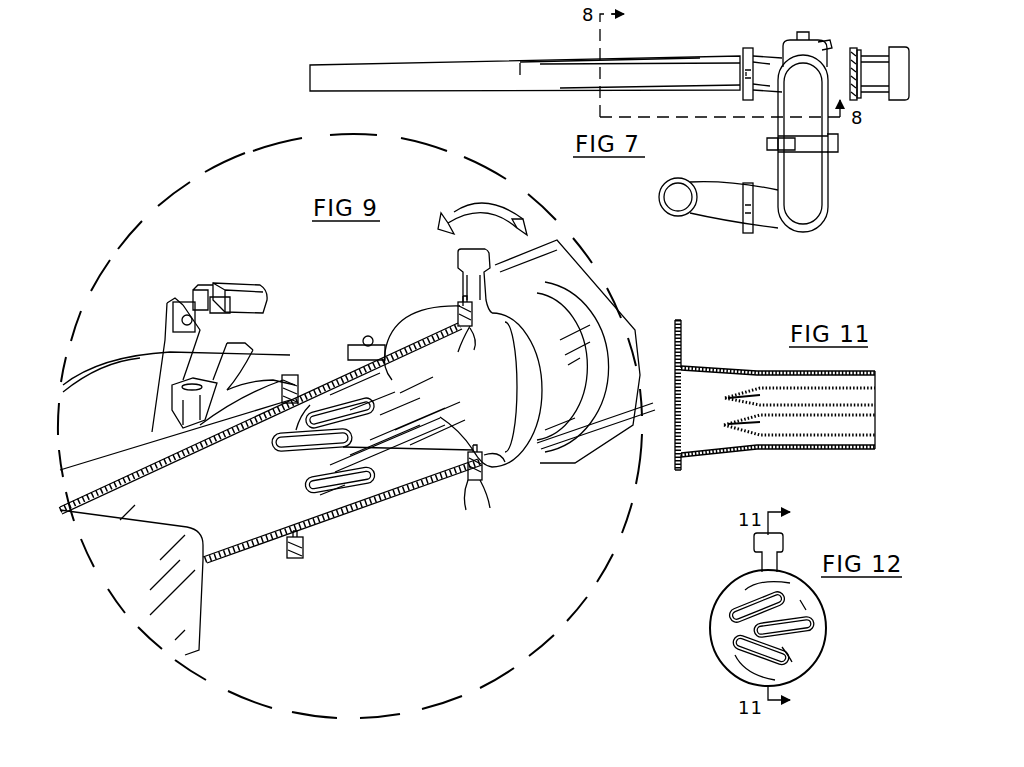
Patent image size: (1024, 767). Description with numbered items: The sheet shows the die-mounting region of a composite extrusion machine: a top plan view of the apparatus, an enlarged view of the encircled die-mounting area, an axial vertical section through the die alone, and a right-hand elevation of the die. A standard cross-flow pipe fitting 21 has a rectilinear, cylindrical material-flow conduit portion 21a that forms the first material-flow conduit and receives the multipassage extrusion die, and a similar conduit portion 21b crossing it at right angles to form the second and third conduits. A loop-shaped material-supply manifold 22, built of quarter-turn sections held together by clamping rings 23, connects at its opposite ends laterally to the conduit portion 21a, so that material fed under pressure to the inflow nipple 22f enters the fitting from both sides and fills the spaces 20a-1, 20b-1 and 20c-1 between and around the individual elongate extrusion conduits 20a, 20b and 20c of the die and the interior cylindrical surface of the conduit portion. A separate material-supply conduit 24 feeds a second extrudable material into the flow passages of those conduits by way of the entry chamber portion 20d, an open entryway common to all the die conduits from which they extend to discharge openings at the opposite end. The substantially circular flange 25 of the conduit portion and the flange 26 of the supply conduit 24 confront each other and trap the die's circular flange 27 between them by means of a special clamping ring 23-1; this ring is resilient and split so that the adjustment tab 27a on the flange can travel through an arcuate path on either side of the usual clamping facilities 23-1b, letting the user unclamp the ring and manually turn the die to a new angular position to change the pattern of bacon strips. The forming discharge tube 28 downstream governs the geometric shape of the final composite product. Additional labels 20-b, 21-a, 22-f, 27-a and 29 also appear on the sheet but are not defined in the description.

In FIG. 9, the extrusion conduit 20a is at (346, 437).
In FIG. 11, the extrusion conduit 20a is at (872, 411).
In FIG. 12, the extrusion conduit 20a is at (805, 628).
In FIG. 11, the extrusion conduit 20b is at (872, 440).
In FIG. 12, the extrusion conduit 20b is at (790, 657).
In FIG. 9, the extrusion conduit 20c is at (401, 398).
In FIG. 11, the extrusion conduit 20c is at (872, 380).
In FIG. 12, the extrusion conduit 20c is at (735, 615).
In FIG. 12, the entry chamber portion 20d is at (750, 660).
In FIG. 9, the space between extrusion conduits 20a-1 is at (320, 468).
In FIG. 9, the space between extrusion conduits 20b-1 is at (305, 425).
In FIG. 9, the space between extrusion conduits and conduit surface 20c-1 is at (352, 495).
In FIG. 9, the passage tube 20-b is at (400, 450).
In FIG. 9, the cross-flow pipe fitting 21 is at (292, 375).
In FIG. 9, the material-flow conduit portion 21a is at (320, 397).
In FIG. 9, the material-flow conduit portion 21b is at (272, 352).
In FIG. 7, the hose clamp 21-a is at (770, 62).
In FIG. 9, the material-supply manifold 22 is at (144, 350).
In FIG. 7, the inflow nipple 22f is at (432, 0).
In FIG. 7, the hose fitting 22-f is at (770, 200).
In FIG. 9, the clamping ring 23 is at (300, 558).
In FIG. 7, the special clamping ring 23-1 is at (892, 55).
In FIG. 9, the special clamping ring 23-1 is at (422, 330).
In FIG. 9, the clamping facilities 23-1b is at (368, 338).
In FIG. 7, the material-supply conduit 24 is at (875, 78).
In FIG. 9, the material-supply conduit 24 is at (572, 352).
In FIG. 9, the flange 25 is at (466, 318).
In FIG. 9, the flange 26 is at (482, 455).
In FIG. 9, the die flange 27 is at (527, 412).
In FIG. 11, the die flange 27 is at (775, 407).
In FIG. 12, the die flange 27 is at (722, 600).
In FIG. 9, the adjustment tab 27a is at (470, 270).
In FIG. 11, the adjustment tab 27a is at (682, 350).
In FIG. 12, the adjustment tab 27a is at (762, 555).
In FIG. 7, the nozzle plate 27-a is at (860, 50).
In FIG. 7, the forming discharge tube 28 is at (400, 70).
In FIG. 9, the forming discharge tube 28 is at (185, 608).
In FIG. 7, the nut 29 is at (898, 96).
In FIG. 9, the nut 29 is at (625, 410).